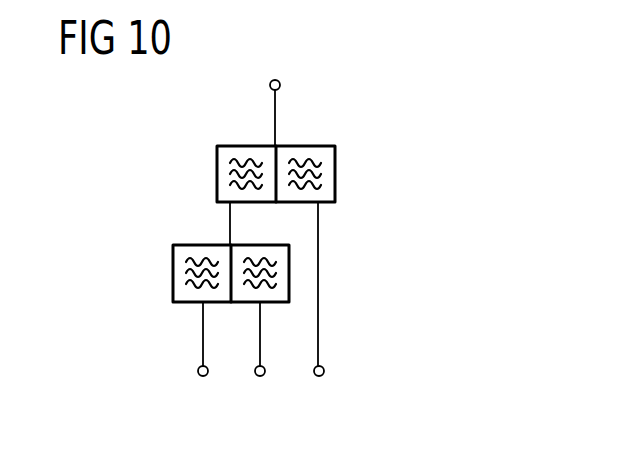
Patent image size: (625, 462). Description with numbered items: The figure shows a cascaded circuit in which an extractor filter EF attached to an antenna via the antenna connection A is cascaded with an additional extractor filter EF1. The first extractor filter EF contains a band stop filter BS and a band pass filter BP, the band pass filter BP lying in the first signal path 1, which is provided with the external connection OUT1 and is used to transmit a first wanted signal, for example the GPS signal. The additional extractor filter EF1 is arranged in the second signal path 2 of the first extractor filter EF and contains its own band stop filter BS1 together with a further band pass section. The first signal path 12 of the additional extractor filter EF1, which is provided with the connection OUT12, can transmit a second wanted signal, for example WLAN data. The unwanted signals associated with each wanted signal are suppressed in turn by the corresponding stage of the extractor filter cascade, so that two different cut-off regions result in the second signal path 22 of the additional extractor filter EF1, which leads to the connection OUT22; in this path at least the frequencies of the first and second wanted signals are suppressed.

The first signal path 1 is at (318, 255).
The second signal path 2 is at (229, 232).
The first signal path of the additional extractor filter 12 is at (260, 345).
The second signal path of the additional extractor filter 22 is at (203, 325).
The antenna connection A is at (275, 99).
The extractor filter EF is at (339, 139).
The additional extractor filter EF1 is at (173, 254).
The band stop filter BS is at (246, 146).
The band pass filter BP is at (302, 146).
The band stop filter of the additional extractor filter BS1 is at (173, 273).
The external connection OUT1 is at (325, 372).
The connection OUT12 is at (259, 377).
The connection OUT22 is at (197, 372).